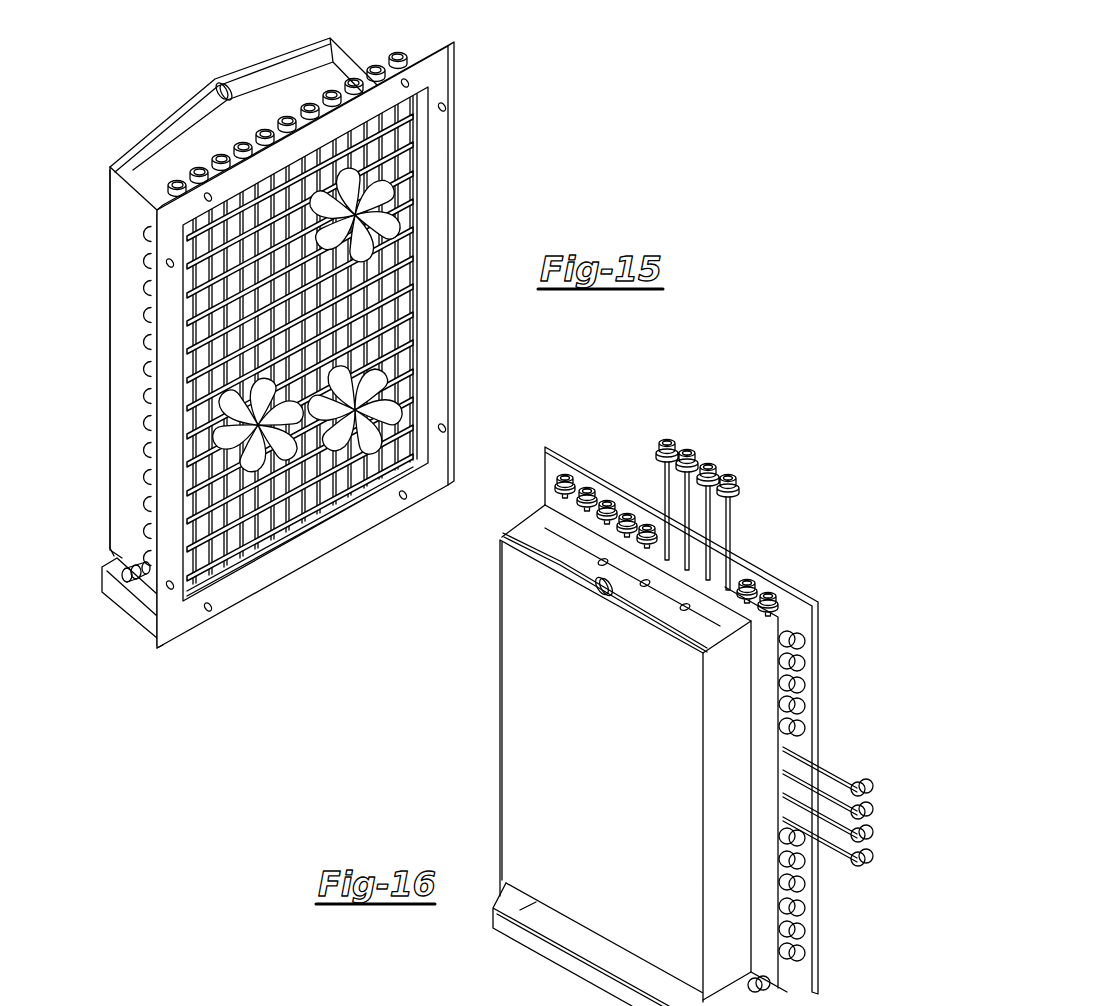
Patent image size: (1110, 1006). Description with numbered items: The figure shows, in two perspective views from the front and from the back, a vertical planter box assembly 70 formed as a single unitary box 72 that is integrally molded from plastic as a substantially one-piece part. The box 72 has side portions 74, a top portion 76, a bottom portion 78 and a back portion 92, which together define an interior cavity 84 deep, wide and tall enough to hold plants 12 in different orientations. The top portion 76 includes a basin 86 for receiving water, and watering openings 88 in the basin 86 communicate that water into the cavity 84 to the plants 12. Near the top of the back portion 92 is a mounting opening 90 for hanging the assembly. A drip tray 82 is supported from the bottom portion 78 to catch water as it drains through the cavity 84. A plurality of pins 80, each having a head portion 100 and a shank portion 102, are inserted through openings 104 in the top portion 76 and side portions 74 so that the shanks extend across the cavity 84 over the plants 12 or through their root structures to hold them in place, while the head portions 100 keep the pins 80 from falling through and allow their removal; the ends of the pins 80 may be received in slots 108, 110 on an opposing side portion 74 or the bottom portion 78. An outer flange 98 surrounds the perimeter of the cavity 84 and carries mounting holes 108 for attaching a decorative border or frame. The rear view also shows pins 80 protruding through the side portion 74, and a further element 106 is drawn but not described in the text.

In FIG. 15, the plants 12 is at (383, 197).
In FIG. 15, the vertical planter box assembly 70 is at (120, 96).
In FIG. 16, the vertical planter box assembly 70 is at (832, 480).
In FIG. 15, the box 72 is at (100, 212).
In FIG. 16, the box 72 is at (490, 705).
In FIG. 15, the side portions 74 is at (131, 300).
In FIG. 16, the side portions 74 is at (730, 862).
In FIG. 15, the top portion 76 is at (337, 40).
In FIG. 15, the bottom portion 78 is at (108, 553).
In FIG. 15, the pins 80 is at (147, 367).
In FIG. 16, the pins 80 is at (710, 463).
In FIG. 15, the drip tray 82 is at (130, 605).
In FIG. 16, the drip tray 82 is at (530, 936).
In FIG. 15, the cavity 84 is at (343, 297).
In FIG. 15, the basin 86 is at (273, 118).
In FIG. 16, the basin 86 is at (543, 536).
In FIG. 16, the watering openings 88 is at (685, 608).
In FIG. 15, the mounting opening 90 is at (216, 92).
In FIG. 15, the back portion 92 is at (105, 170).
In FIG. 16, the back portion 92 is at (538, 796).
In FIG. 15, the outer flange 98 is at (437, 375).
In FIG. 16, the outer flange 98 is at (818, 668).
In FIG. 16, the head portion 100 is at (748, 482).
In FIG. 16, the shank portion 102 is at (745, 513).
In FIG. 16, the openings 104 is at (745, 598).
In FIG. 16, the pins 106 is at (790, 783).
In FIG. 15, the mounting holes 108 is at (212, 567).
In FIG. 15, the slots 110 is at (410, 132).